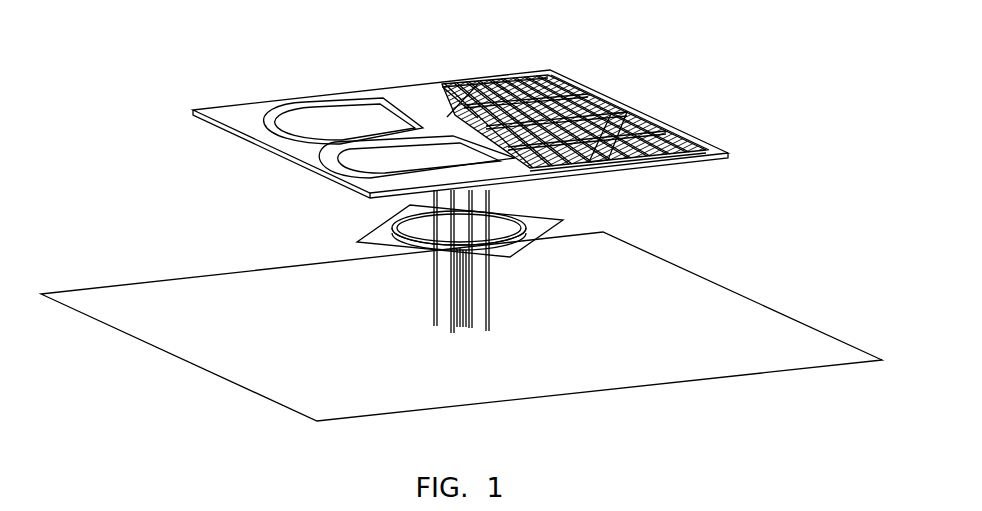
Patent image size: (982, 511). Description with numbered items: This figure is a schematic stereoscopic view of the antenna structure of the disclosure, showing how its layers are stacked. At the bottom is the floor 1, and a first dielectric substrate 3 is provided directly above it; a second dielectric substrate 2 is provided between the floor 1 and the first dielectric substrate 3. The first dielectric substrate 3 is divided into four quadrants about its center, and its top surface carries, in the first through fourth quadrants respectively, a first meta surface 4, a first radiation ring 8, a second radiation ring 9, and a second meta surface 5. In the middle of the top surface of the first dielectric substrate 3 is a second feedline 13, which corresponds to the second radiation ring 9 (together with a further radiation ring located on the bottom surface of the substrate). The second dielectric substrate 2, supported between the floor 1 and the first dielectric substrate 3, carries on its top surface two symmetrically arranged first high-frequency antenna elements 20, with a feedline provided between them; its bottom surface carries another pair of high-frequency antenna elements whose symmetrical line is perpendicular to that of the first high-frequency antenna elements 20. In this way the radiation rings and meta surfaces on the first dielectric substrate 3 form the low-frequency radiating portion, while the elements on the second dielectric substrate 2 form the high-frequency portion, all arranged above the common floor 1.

The floor 1 is at (461, 315).
The second dielectric substrate 2 is at (386, 229).
The first dielectric substrate 3 is at (457, 112).
The first meta surface 4 is at (575, 157).
The second meta surface 5 is at (643, 158).
The first radiation ring 8 is at (342, 82).
The second radiation ring 9 is at (364, 164).
The second feedline 13 is at (426, 78).
The first high-frequency antenna element 20 is at (515, 218).